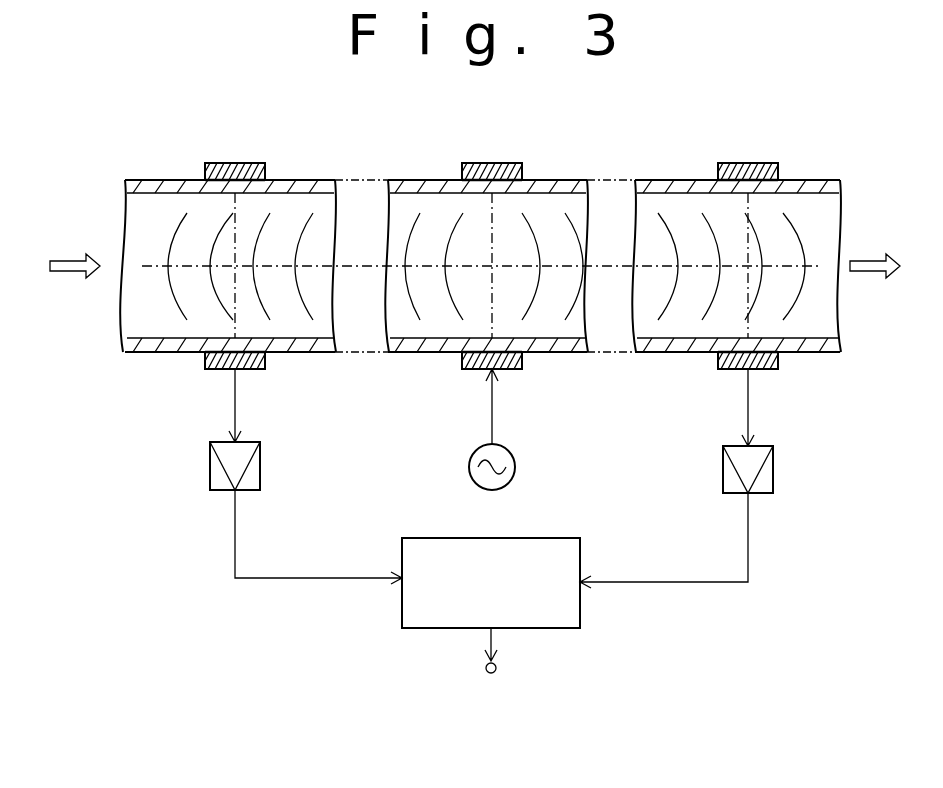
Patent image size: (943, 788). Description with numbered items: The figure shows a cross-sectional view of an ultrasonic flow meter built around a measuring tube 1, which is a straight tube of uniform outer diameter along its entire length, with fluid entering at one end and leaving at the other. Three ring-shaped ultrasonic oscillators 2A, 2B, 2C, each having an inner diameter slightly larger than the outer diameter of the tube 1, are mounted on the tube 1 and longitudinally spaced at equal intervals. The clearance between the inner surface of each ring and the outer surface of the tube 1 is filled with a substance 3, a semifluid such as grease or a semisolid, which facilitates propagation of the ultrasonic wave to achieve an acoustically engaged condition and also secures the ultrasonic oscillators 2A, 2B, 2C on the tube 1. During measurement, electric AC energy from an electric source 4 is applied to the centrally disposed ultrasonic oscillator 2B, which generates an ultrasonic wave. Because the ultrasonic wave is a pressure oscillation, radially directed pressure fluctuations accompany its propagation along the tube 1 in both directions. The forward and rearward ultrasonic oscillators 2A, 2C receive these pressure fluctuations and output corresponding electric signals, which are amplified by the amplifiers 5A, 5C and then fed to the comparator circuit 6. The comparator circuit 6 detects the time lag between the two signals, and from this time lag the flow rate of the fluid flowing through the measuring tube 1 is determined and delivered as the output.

The measuring tube 1 is at (167, 180).
The ultrasonic oscillator 2A is at (237, 163).
The ultrasonic oscillator 2B is at (492, 163).
The ultrasonic oscillator 2C is at (748, 163).
The substance 3 is at (782, 180).
The electric source 4 is at (512, 452).
The amplifier 5A is at (210, 465).
The amplifier 5C is at (773, 470).
The comparator circuit 6 is at (580, 612).